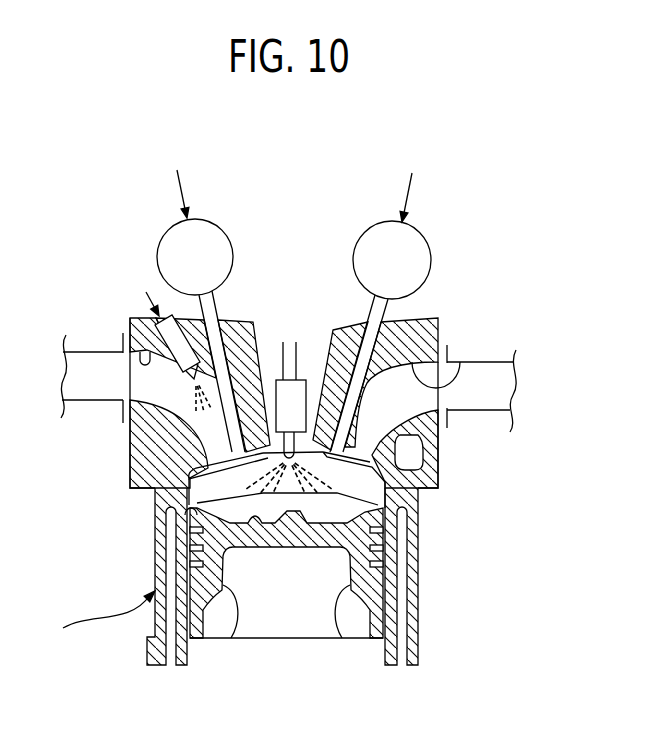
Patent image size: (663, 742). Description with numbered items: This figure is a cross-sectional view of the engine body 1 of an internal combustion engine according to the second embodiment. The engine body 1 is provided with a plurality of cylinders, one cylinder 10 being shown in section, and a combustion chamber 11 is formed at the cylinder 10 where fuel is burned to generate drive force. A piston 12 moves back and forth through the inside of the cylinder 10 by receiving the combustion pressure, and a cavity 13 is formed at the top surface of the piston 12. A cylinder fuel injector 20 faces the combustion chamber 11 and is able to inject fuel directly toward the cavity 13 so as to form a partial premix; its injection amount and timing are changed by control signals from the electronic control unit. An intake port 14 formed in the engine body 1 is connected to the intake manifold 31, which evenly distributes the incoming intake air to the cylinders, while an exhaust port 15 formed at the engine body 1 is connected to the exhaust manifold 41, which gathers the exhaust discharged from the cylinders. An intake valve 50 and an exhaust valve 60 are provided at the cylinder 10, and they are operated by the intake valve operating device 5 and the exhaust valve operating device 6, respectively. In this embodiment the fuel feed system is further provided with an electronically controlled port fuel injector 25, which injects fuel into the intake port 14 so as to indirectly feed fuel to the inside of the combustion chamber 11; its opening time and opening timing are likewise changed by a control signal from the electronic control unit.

The engine body 1 is at (99, 499).
The intake valve operating device 5 is at (211, 220).
The exhaust valve operating device 6 is at (428, 230).
The cylinder 10 is at (160, 518).
The combustion chamber 11 is at (353, 482).
The piston 12 is at (215, 582).
The cavity 13 is at (255, 518).
The intake port 14 is at (133, 320).
The exhaust port 15 is at (460, 362).
The cylinder fuel injector 20 is at (290, 400).
The port fuel injector 25 is at (177, 317).
The intake manifold 31 is at (90, 400).
The exhaust manifold 41 is at (475, 412).
The intake valve 50 is at (217, 350).
The exhaust valve 60 is at (370, 312).